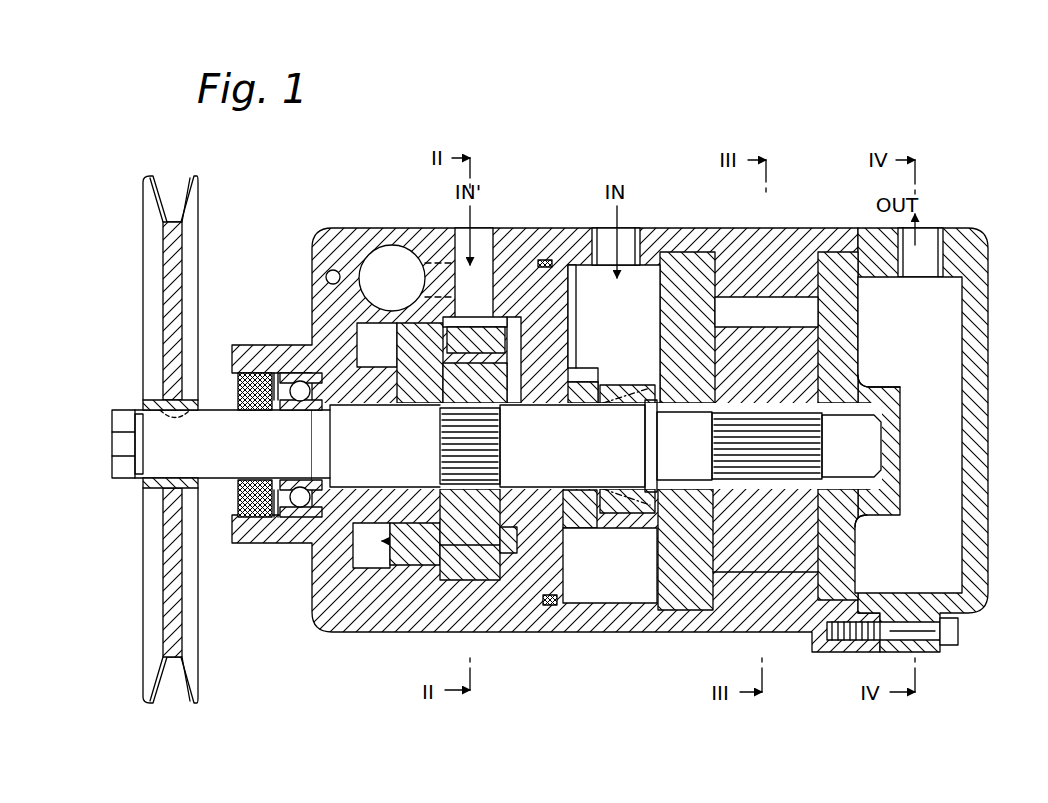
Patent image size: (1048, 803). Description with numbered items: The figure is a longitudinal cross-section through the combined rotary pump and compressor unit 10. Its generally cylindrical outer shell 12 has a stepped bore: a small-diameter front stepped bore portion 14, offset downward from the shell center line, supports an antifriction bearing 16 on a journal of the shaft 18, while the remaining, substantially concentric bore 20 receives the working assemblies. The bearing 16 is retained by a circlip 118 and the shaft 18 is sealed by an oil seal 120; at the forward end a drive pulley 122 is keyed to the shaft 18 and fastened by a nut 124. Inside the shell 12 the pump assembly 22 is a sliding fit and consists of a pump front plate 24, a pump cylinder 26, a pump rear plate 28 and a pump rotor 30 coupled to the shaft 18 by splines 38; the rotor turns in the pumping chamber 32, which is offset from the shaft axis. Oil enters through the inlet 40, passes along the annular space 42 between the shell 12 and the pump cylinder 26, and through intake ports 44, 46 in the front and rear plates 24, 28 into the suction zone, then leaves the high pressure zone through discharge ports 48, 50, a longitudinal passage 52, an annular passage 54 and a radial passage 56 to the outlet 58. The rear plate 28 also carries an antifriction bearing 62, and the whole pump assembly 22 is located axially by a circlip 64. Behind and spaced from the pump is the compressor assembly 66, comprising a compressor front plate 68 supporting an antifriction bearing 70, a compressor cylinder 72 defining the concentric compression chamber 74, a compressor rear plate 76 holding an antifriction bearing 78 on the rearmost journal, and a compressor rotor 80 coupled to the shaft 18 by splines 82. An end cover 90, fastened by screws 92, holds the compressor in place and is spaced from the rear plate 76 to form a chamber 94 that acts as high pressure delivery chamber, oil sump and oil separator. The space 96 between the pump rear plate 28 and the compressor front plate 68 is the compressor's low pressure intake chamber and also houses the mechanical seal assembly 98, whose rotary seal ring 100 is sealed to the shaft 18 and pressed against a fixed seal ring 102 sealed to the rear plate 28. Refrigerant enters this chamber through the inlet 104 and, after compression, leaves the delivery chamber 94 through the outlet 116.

The combined rotary pump and compressor unit 10 is at (589, 166).
The outer shell 12 is at (708, 238).
The front stepped bore portion 14 is at (310, 385).
The antifriction bearing 16 is at (295, 508).
The shaft 18 is at (220, 408).
The stepped bore 20 is at (652, 237).
The pump assembly 22 is at (578, 360).
The pump front plate 24 is at (398, 392).
The pump cylinder 26 is at (476, 532).
The pump rear plate 28 is at (548, 407).
The pump rotor 30 is at (474, 674).
The pumping chamber 32 is at (503, 407).
The splines or serrations 38 is at (500, 452).
The inlet 40 is at (487, 237).
The annular space 42 is at (463, 307).
The intake port 44 is at (425, 393).
The intake port 46 is at (568, 308).
The discharge port 48 is at (432, 550).
The discharge port 50 is at (483, 527).
The longitudinal passage 52 is at (397, 545).
The annular passage 54 is at (318, 290).
The radial passage 56 is at (372, 352).
The outlet 58 is at (387, 284).
The antifriction bearing 62 is at (556, 496).
The circlip 64 is at (575, 240).
The compressor assembly 66 is at (867, 365).
The compressor front plate 68 is at (697, 385).
The antifriction bearing 70 is at (677, 492).
The compressor cylinder 72 is at (734, 560).
The compression chamber 74 is at (757, 324).
The compressor rear plate 76 is at (851, 560).
The antifriction bearing 78 is at (860, 490).
The compressor rotor 80 is at (778, 575).
The splines or serrations 82 is at (830, 446).
The end cover 90 is at (986, 421).
The screws 92 is at (887, 642).
The chamber 94 is at (927, 404).
The space 96 is at (623, 305).
The mechanical seal assembly 98 is at (617, 377).
The rotary seal ring 100 is at (607, 514).
The fixed seal ring 102 is at (592, 528).
The inlet 104 is at (601, 236).
The outlet 116 is at (934, 237).
The circlip 118 is at (270, 372).
The oil seal 120 is at (253, 520).
The drive pulley 122 is at (185, 268).
The nut 124 is at (119, 409).